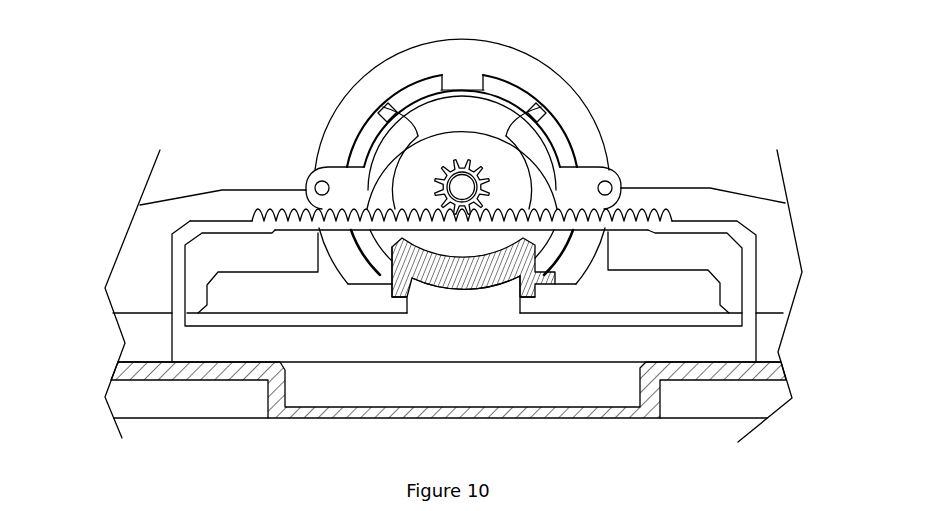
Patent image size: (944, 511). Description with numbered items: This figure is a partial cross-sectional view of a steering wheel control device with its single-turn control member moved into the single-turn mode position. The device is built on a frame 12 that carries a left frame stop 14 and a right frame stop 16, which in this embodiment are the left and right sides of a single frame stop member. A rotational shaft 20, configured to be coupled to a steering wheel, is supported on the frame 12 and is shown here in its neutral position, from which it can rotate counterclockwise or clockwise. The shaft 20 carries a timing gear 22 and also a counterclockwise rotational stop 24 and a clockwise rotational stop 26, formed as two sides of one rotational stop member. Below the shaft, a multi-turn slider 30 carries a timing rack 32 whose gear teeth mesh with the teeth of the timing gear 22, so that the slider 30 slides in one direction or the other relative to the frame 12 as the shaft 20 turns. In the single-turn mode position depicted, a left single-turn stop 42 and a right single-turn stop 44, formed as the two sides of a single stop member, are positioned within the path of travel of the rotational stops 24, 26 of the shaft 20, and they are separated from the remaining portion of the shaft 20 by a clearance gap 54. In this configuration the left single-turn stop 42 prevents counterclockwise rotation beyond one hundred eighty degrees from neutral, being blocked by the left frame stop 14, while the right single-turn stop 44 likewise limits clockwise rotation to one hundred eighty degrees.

The frame 12 is at (718, 410).
The left frame stop 14 is at (437, 298).
The right frame stop 16 is at (520, 313).
The rotational shaft 20 is at (532, 62).
The timing gear 22 is at (462, 160).
The counterclockwise rotational stop 24 is at (413, 118).
The clockwise rotational stop 26 is at (513, 117).
The multi-turn slider 30 is at (743, 230).
The timing rack 32 is at (643, 208).
The left single-turn stop 42 is at (393, 267).
The right single-turn stop 44 is at (477, 285).
The clearance gap 54 is at (512, 233).